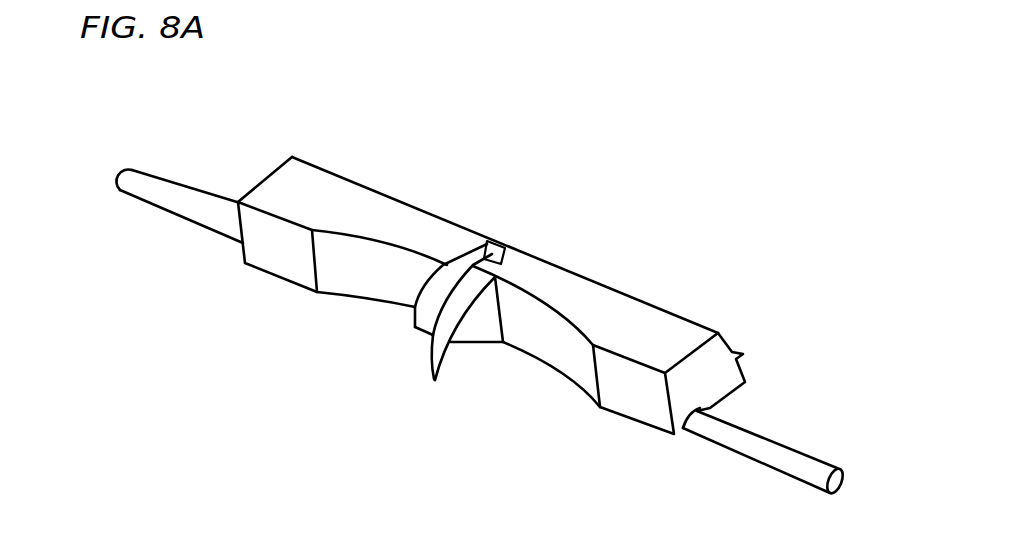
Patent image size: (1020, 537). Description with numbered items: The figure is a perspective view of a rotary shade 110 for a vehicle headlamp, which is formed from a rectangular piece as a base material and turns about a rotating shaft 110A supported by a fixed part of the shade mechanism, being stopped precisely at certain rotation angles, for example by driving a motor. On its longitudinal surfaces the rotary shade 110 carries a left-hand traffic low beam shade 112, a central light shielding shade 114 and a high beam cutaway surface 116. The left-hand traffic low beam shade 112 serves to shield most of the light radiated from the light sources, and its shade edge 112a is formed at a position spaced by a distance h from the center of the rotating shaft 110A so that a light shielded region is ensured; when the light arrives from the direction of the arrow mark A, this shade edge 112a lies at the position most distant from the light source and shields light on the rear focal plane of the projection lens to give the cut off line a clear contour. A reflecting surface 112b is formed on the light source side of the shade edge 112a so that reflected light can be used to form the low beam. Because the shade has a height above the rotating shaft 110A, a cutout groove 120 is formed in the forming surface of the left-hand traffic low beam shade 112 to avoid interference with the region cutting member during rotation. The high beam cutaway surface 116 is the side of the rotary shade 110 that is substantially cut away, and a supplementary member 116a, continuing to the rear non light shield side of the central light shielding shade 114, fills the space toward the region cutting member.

The rotary shade 110 is at (700, 250).
The rotating shaft 110A is at (785, 453).
The left-hand traffic low beam shade 112 is at (402, 227).
The shade edge 112a is at (355, 237).
The reflecting surface 112b is at (322, 193).
The central light shielding shade 114 is at (473, 328).
The high beam cutaway surface 116 is at (727, 395).
The supplementary member 116a is at (427, 357).
The cutout groove 120 is at (488, 242).
The arrow mark A is at (557, 262).
The distance h is at (235, 203).